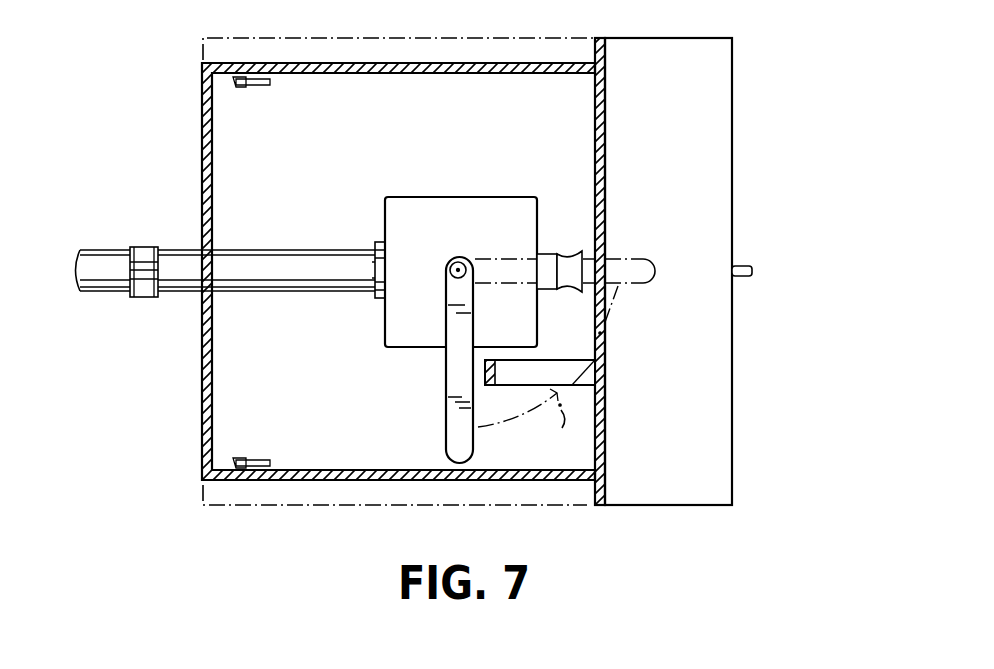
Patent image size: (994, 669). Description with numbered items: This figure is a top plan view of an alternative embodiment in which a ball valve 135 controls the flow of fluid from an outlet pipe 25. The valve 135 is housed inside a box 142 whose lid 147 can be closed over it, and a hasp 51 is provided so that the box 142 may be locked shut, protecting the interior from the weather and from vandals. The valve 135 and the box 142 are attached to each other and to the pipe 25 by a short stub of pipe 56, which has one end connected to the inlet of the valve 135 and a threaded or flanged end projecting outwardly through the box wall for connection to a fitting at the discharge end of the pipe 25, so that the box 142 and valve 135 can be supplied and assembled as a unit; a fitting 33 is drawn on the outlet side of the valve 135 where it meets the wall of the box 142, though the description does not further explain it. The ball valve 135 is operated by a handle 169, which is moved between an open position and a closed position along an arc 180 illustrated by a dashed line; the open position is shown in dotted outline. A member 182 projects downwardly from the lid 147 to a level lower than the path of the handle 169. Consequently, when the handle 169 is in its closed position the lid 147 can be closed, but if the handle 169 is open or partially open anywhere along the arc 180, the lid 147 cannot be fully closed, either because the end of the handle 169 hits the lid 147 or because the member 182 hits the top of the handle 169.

The box 142 is at (748, 68).
The lid 147 is at (711, 144).
The pipe 25 is at (100, 265).
The stub of pipe 56 is at (177, 262).
The ball valve 135 is at (392, 316).
The coupling 33 is at (573, 253).
The handle 169 is at (651, 264).
The member 182 is at (553, 369).
The arc 180 is at (548, 374).
The hasp 51 is at (753, 267).